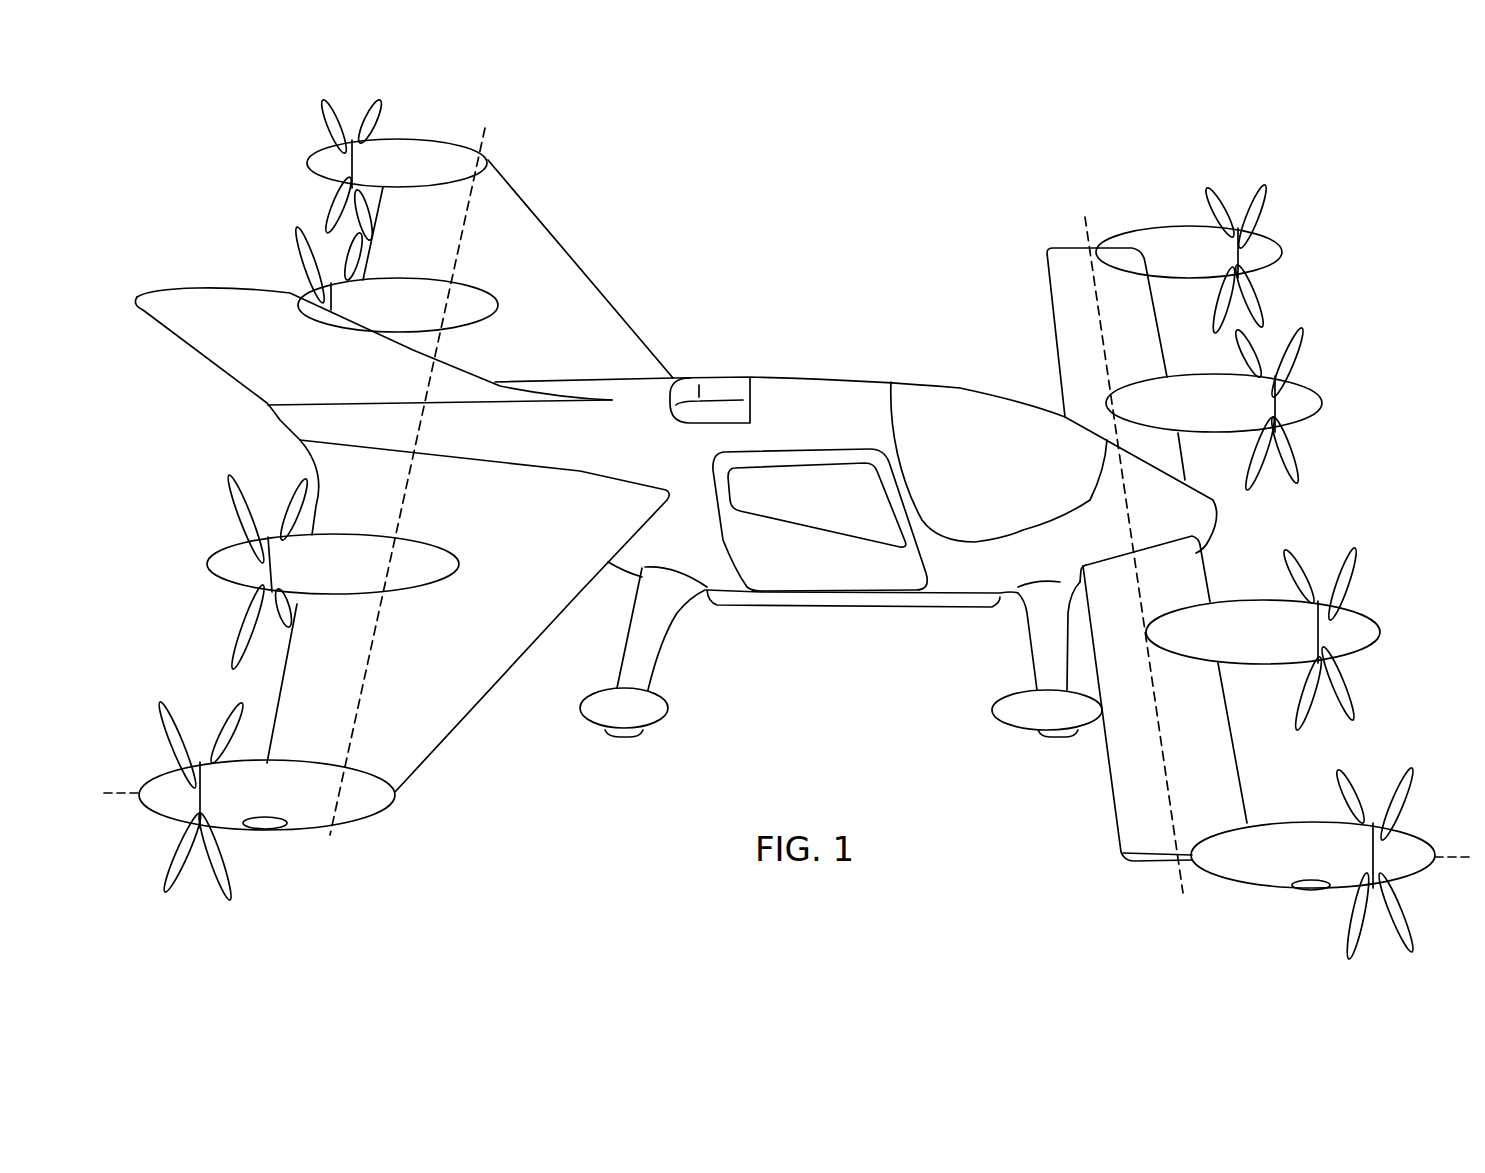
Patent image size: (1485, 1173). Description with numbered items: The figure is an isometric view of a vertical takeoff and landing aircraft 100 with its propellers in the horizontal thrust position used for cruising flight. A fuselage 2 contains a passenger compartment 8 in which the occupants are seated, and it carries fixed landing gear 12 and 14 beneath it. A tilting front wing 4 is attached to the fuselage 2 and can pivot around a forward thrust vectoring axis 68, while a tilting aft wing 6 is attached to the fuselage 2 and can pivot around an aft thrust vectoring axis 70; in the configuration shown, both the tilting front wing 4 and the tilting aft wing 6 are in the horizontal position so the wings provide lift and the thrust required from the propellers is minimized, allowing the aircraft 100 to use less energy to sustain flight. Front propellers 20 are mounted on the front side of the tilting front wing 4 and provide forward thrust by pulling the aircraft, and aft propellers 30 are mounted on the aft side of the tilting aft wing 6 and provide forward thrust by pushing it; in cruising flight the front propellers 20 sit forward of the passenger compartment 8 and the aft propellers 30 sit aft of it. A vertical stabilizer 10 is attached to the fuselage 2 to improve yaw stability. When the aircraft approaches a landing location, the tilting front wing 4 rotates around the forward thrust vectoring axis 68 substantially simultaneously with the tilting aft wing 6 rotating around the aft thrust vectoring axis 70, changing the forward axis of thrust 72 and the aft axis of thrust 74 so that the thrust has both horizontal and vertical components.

The vertical takeoff and landing aircraft 100 is at (1200, 158).
The fuselage 2 is at (810, 398).
The tilting front wing 4 is at (1068, 338).
The tilting aft wing 6 is at (547, 251).
The passenger compartment 8 is at (851, 580).
The vertical stabilizer 10 is at (163, 296).
The fixed landing gear 12 is at (623, 740).
The fixed landing gear 14 is at (1052, 738).
The front propellers 20 is at (1267, 203).
The aft propellers 30 is at (327, 125).
The forward thrust vectoring axis 68 is at (1173, 877).
The aft thrust vectoring axis 70 is at (360, 700).
The forward axis of thrust 72 is at (1467, 862).
The aft axis of thrust 74 is at (113, 797).